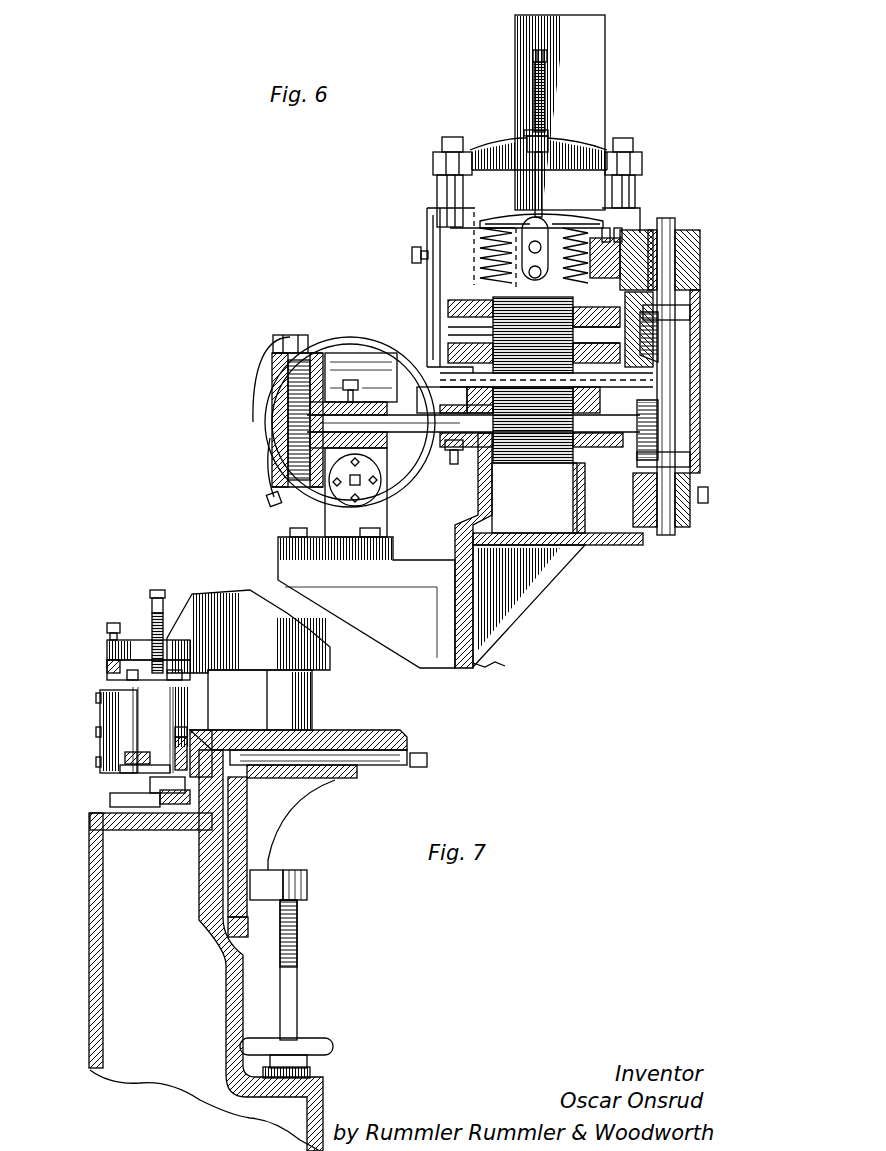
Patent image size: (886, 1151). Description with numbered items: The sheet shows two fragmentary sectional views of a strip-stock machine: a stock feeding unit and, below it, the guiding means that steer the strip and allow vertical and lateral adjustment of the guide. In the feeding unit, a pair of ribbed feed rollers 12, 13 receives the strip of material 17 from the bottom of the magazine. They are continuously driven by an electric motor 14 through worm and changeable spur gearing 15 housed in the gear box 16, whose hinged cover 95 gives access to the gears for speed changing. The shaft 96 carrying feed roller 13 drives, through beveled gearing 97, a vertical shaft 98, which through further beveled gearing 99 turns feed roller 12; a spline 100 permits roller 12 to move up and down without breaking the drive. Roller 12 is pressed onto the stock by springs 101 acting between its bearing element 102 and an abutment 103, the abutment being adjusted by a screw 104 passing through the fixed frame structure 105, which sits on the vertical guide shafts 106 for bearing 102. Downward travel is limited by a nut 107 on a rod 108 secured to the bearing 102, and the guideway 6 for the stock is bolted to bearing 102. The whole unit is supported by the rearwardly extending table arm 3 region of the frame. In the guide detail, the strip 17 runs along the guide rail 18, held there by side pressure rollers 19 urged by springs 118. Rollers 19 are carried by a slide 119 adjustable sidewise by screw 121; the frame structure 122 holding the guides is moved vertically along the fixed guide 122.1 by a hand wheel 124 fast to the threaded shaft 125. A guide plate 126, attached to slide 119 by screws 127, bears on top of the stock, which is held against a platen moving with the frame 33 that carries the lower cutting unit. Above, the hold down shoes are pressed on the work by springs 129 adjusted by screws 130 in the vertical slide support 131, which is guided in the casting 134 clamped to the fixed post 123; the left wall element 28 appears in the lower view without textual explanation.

In FIG. 6, the table arm 3 is at (463, 626).
In FIG. 6, the guideway 6 is at (522, 22).
In FIG. 6, the feed roller 12 is at (484, 300).
In FIG. 6, the feed roller 13 is at (541, 466).
In FIG. 6, the electric motor 14 is at (360, 348).
In FIG. 6, the gearing 15 is at (300, 418).
In FIG. 6, the gear box 16 is at (325, 353).
In FIG. 6, the strip of material 17 is at (548, 381).
In FIG. 7, the strip of material 17 is at (181, 832).
In FIG. 7, the guide rail 18 is at (233, 809).
In FIG. 7, the stock rectifying rollers 19 is at (108, 799).
In FIG. 7, the frame wall 28 is at (98, 834).
In FIG. 7, the frame 33 is at (88, 996).
In FIG. 6, the hinged cover 95 is at (274, 470).
In FIG. 6, the shaft 96 is at (456, 466).
In FIG. 6, the beveled gearing 97 is at (700, 449).
In FIG. 6, the vertical shaft 98 is at (677, 386).
In FIG. 6, the beveled gearing 99 is at (690, 310).
In FIG. 6, the spline 100 is at (690, 234).
In FIG. 6, the springs 101 is at (563, 214).
In FIG. 6, the bearing element 102 is at (450, 295).
In FIG. 6, the abutment 103 is at (500, 214).
In FIG. 6, the screw 104 is at (548, 57).
In FIG. 6, the fixed frame structure 105 is at (486, 145).
In FIG. 6, the vertical guide shafts 106 is at (437, 178).
In FIG. 6, the nut 107 is at (549, 135).
In FIG. 6, the rod 108 is at (545, 168).
In FIG. 7, the springs 118 is at (158, 750).
In FIG. 7, the slide 119 is at (405, 735).
In FIG. 7, the screw 121 is at (370, 767).
In FIG. 7, the frame structure 122 is at (280, 848).
In FIG. 7, the fixed guide 122.1 is at (250, 929).
In FIG. 7, the fixed post 123 is at (310, 692).
In FIG. 7, the hand wheel 124 is at (340, 1047).
In FIG. 7, the threaded shaft 125 is at (300, 988).
In FIG. 7, the guide plate 126 is at (136, 832).
In FIG. 7, the screws 127 is at (190, 731).
In FIG. 7, the springs 129 is at (150, 668).
In FIG. 7, the screws 130 is at (150, 592).
In FIG. 7, the vertical slide support 131 is at (178, 592).
In FIG. 7, the casting 134 is at (250, 610).